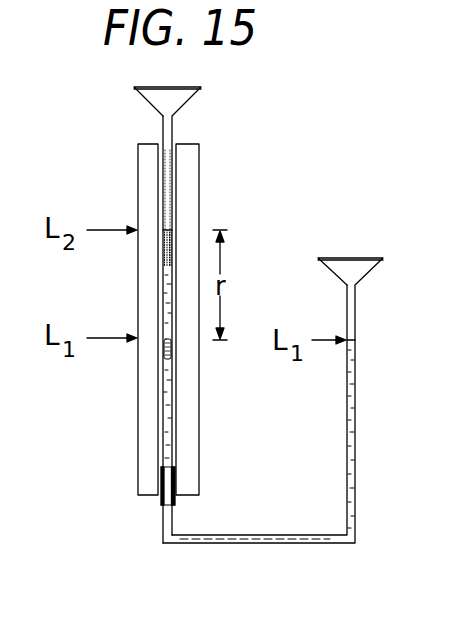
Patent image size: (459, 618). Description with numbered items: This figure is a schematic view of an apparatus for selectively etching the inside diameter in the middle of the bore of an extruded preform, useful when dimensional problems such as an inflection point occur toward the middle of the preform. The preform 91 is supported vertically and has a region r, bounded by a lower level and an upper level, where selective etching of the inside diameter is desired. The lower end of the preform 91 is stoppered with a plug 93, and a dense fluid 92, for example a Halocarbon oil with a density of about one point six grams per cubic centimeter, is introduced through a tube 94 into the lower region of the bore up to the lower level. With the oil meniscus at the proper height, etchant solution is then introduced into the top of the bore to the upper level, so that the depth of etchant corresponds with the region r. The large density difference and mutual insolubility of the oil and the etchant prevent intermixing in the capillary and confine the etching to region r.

The preform 91 is at (199, 196).
The dense fluid 92 is at (355, 392).
The plug 93 is at (161, 499).
The tube 94 is at (186, 100).